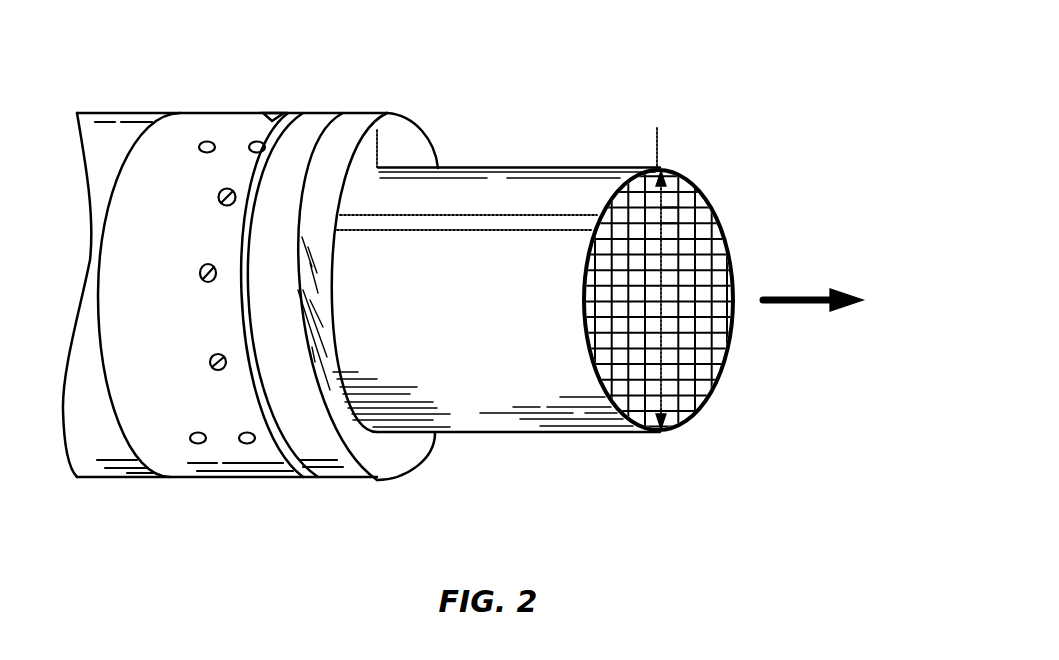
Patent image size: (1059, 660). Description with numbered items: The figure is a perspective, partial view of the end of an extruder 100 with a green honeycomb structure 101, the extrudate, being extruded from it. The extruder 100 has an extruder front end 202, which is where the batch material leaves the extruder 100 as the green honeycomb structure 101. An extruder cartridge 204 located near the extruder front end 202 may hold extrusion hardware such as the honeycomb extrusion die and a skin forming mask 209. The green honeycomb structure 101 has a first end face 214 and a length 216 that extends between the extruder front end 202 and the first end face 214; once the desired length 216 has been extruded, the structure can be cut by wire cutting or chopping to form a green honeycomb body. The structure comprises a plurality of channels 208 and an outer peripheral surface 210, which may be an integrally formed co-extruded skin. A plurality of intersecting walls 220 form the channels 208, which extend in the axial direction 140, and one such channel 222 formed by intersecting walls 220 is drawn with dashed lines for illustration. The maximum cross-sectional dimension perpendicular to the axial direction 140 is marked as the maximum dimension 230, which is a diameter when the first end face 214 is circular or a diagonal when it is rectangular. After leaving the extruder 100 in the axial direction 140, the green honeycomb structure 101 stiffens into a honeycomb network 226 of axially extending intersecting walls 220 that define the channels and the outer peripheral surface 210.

The extruder 100 is at (228, 100).
The green honeycomb structure 101 is at (450, 450).
The axial direction 140 is at (815, 290).
The extruder front end 202 is at (398, 119).
The extruder cartridge 204 is at (275, 480).
The channels 208 is at (718, 313).
The skin forming mask 209 is at (340, 480).
The outer peripheral surface 210 is at (551, 433).
The first end face 214 is at (728, 235).
The length 216 is at (383, 148).
The intersecting walls 220 is at (705, 383).
The channel 222 is at (496, 232).
The honeycomb network 226 is at (681, 209).
The maximum dimension 230 is at (660, 386).